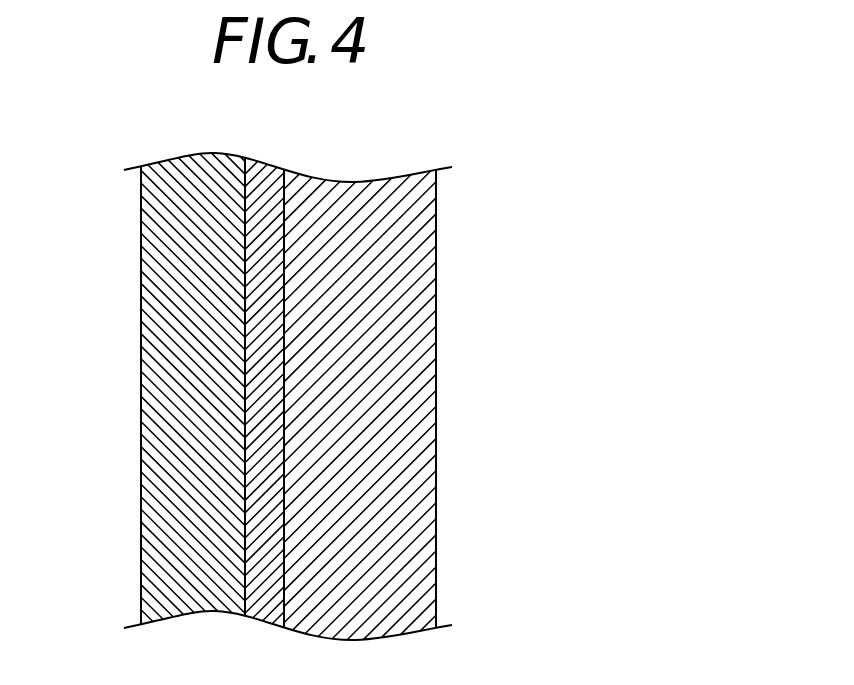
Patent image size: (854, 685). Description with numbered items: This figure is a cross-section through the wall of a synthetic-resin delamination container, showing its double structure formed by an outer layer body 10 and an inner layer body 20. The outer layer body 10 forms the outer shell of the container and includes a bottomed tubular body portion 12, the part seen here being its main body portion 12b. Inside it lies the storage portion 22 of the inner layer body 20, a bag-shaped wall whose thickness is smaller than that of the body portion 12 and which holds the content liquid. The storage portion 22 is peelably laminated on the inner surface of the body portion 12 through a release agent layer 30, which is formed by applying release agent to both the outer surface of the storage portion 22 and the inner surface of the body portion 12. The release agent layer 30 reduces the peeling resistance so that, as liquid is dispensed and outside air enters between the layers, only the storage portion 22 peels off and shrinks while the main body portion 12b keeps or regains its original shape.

The outer layer body 10 is at (436, 408).
The body portion 12 is at (436, 344).
The main body portion 12b is at (410, 482).
The inner layer body 20 is at (143, 388).
The storage portion 22 is at (182, 430).
The release agent layer 30 is at (263, 322).